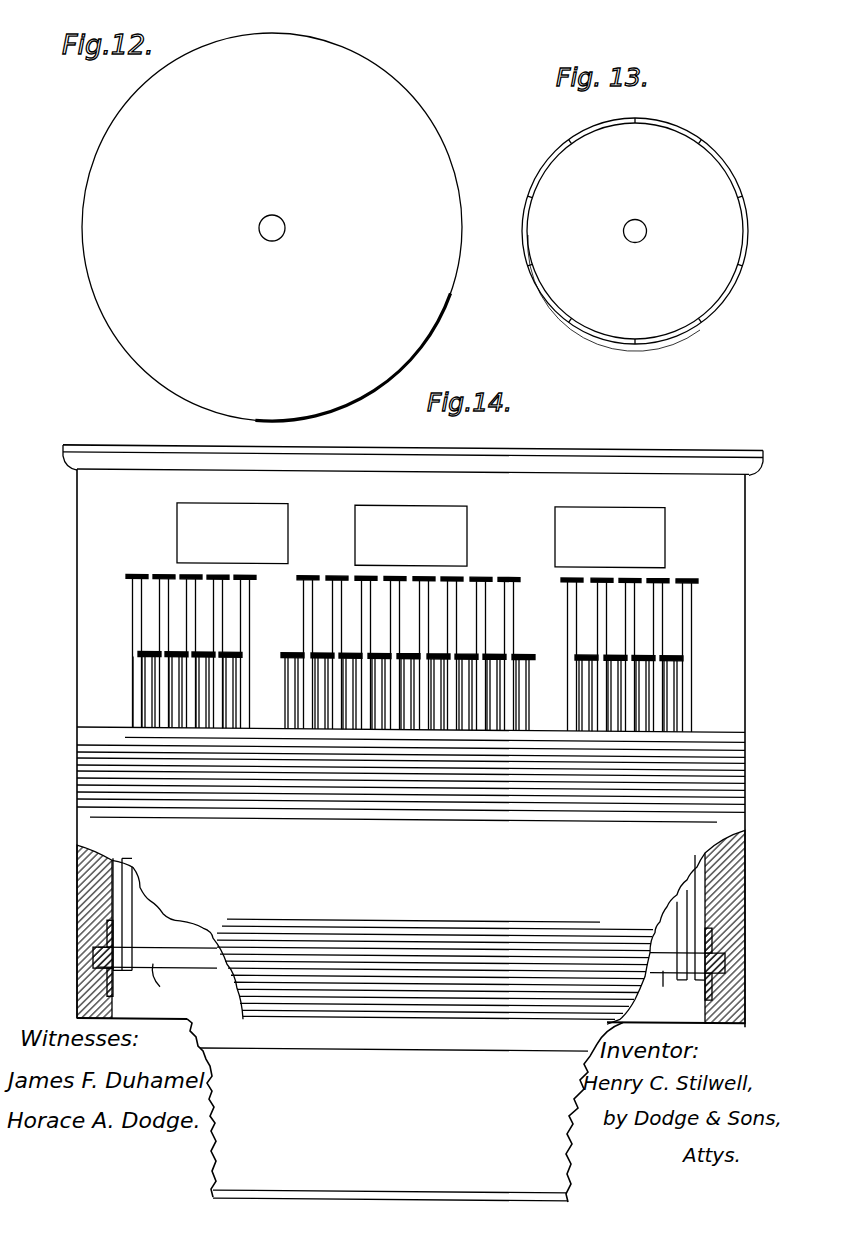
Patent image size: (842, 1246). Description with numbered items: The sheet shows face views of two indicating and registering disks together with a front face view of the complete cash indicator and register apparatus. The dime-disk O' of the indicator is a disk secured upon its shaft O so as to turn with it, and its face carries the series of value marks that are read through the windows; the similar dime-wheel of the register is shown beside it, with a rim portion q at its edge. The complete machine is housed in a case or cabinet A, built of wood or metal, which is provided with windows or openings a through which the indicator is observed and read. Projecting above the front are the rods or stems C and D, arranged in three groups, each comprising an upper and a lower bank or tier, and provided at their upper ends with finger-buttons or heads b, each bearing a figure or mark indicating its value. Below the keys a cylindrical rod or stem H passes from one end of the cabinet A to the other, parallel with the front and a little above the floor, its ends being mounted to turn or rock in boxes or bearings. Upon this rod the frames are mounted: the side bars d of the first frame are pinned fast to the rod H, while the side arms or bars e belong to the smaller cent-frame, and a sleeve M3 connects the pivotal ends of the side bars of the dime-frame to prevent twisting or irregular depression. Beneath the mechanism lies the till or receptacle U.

In FIG. 12, the disk O' is at (272, 227).
In FIG. 13, the shaft O is at (632, 231).
In FIG. 13, the dial rim flange q is at (686, 330).
In FIG. 14, the case or cabinet A is at (62, 684).
In FIG. 14, the windows or openings a is at (356, 533).
In FIG. 14, the finger-buttons or heads b is at (196, 579).
In FIG. 14, the rods or stems C is at (410, 668).
In FIG. 14, the rods or stems D is at (291, 699).
In FIG. 14, the side bars or arms d is at (121, 861).
In FIG. 14, the side arms or bars e is at (132, 916).
In FIG. 14, the cylindrical rod or stem H is at (105, 958).
In FIG. 14, the sleeve M3 is at (412, 986).
In FIG. 14, the receptacle bag U is at (405, 1110).